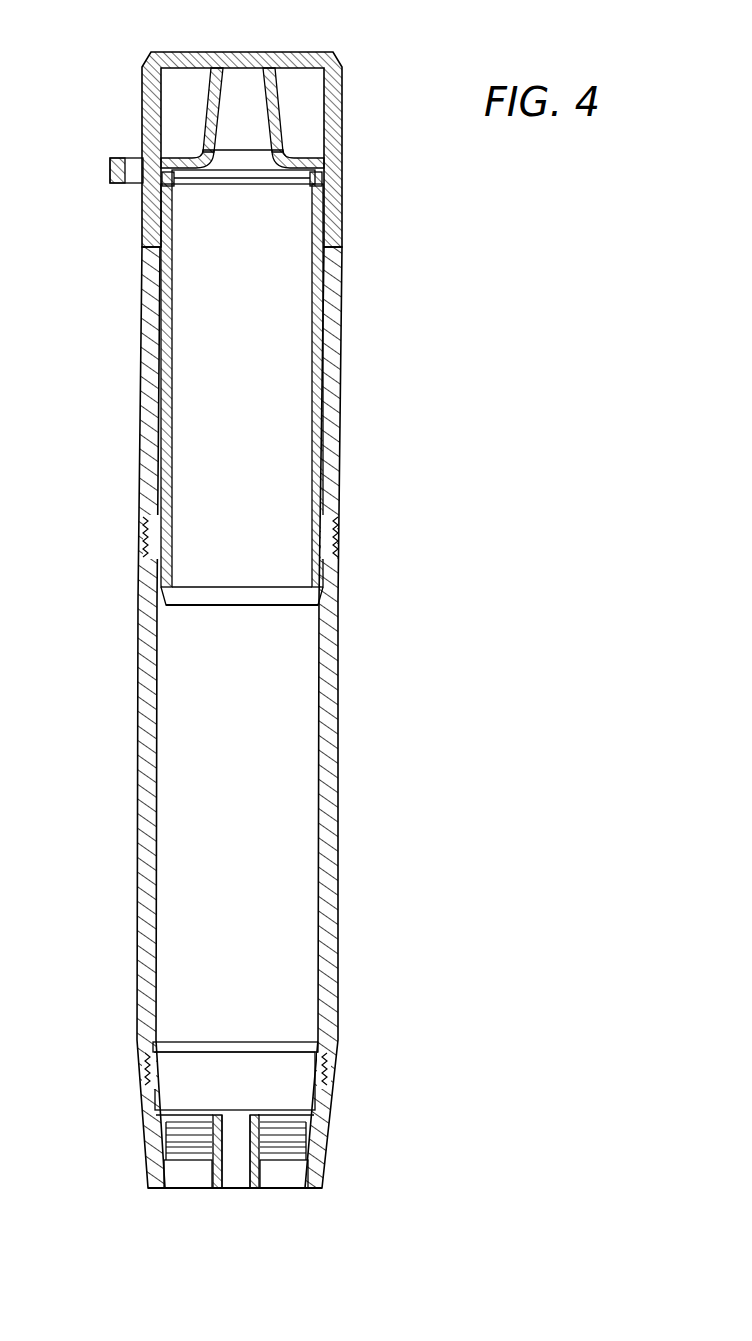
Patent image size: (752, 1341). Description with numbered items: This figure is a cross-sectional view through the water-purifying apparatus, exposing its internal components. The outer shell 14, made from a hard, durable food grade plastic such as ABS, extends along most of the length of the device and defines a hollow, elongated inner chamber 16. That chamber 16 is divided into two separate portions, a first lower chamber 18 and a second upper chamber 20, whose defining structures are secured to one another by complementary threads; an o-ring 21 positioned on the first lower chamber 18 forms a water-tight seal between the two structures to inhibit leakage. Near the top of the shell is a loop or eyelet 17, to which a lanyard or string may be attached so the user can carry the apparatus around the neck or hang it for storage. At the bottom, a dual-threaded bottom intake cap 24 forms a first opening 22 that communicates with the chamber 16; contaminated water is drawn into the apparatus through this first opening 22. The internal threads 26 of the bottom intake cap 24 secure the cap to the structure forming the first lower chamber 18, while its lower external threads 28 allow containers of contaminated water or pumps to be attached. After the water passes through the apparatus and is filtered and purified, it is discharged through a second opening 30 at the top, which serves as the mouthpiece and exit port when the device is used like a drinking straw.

The outer shell 14 is at (338, 393).
The inner chamber 16 is at (318, 342).
The eyelet 17 is at (110, 168).
The first lower chamber 18 is at (350, 677).
The second upper chamber 20 is at (128, 362).
The o-ring 21 is at (333, 553).
The first opening 22 is at (236, 1165).
The bottom intake cap 24 is at (330, 1120).
The internal threads 26 is at (143, 1070).
The lower external threads 28 is at (302, 1145).
The second opening 30 is at (241, 70).